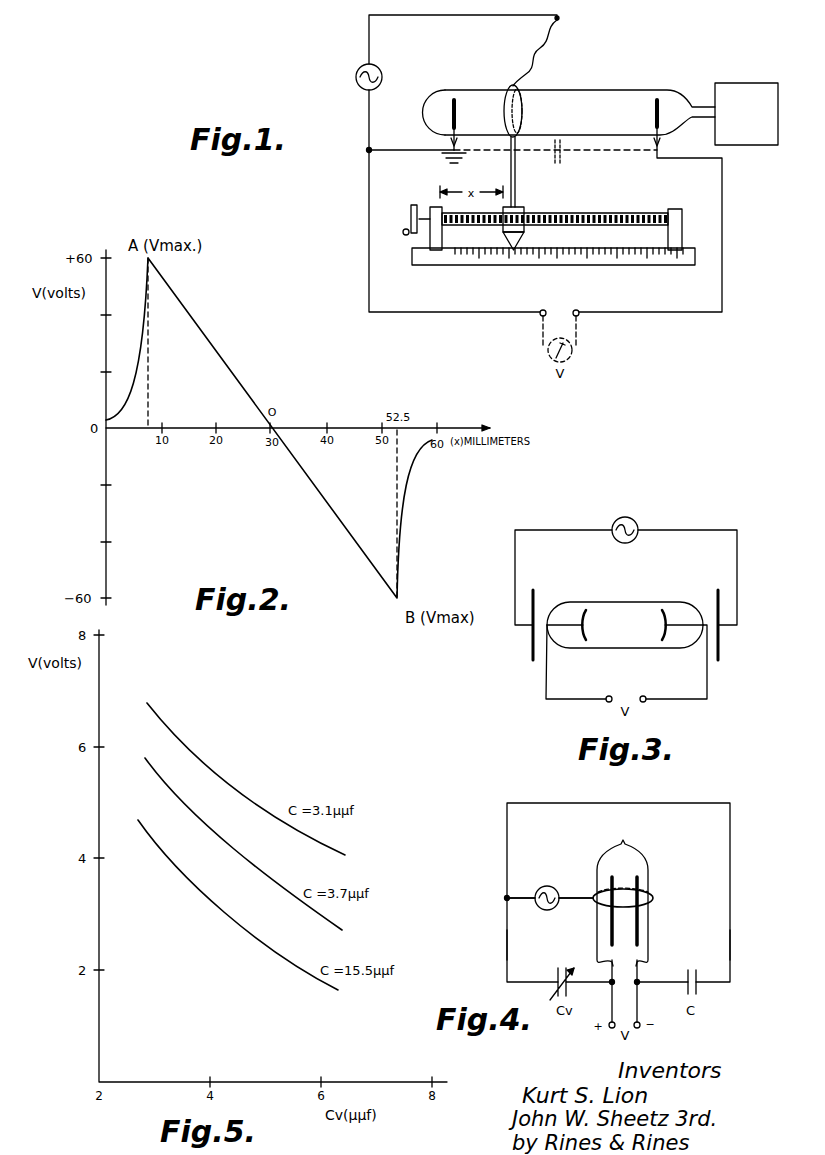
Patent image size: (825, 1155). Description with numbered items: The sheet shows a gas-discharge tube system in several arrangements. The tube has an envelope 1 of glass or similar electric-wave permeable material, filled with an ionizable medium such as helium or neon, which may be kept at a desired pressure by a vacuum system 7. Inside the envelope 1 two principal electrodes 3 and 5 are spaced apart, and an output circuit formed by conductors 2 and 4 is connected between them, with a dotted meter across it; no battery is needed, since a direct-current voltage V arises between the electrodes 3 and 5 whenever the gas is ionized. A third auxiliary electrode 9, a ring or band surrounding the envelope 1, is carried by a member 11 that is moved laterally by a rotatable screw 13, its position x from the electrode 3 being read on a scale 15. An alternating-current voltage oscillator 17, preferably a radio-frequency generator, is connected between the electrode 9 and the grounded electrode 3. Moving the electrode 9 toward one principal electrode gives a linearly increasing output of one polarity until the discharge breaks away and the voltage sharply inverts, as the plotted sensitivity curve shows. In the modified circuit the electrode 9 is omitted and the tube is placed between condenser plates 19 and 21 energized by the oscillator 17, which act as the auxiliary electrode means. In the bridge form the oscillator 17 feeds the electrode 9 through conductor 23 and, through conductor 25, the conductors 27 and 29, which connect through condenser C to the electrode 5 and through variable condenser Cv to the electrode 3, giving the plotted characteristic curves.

In FIG. 1, the envelope 1 is at (626, 90).
In FIG. 3, the envelope 1 is at (612, 603).
In FIG. 4, the envelope 1 is at (650, 862).
In FIG. 1, the conductor 2 is at (540, 315).
In FIG. 3, the conductor 2 is at (594, 700).
In FIG. 4, the conductor 2 is at (608, 1022).
In FIG. 1, the electrode 3 is at (454, 98).
In FIG. 3, the electrode 3 is at (584, 640).
In FIG. 4, the electrode 3 is at (610, 877).
In FIG. 1, the conductor 4 is at (600, 313).
In FIG. 3, the conductor 4 is at (658, 700).
In FIG. 4, the conductor 4 is at (641, 1022).
In FIG. 1, the electrode 5 is at (661, 107).
In FIG. 3, the electrode 5 is at (665, 640).
In FIG. 4, the electrode 5 is at (640, 882).
In FIG. 1, the vacuum system 7 is at (750, 83).
In FIG. 1, the auxiliary electrode 9 is at (510, 85).
In FIG. 4, the auxiliary electrode 9 is at (650, 906).
In FIG. 1, the member 11 is at (517, 180).
In FIG. 1, the rotatable screw 13 is at (630, 197).
In FIG. 1, the scale 15 is at (606, 249).
In FIG. 1, the voltage oscillator 17 is at (357, 67).
In FIG. 3, the voltage oscillator 17 is at (638, 521).
In FIG. 4, the voltage oscillator 17 is at (553, 886).
In FIG. 3, the condenser plate 19 is at (530, 645).
In FIG. 3, the condenser plate 21 is at (722, 648).
In FIG. 4, the conductor 23 is at (575, 900).
In FIG. 4, the conductor 25 is at (520, 900).
In FIG. 4, the conductor 27 is at (730, 940).
In FIG. 4, the conductor 29 is at (507, 948).